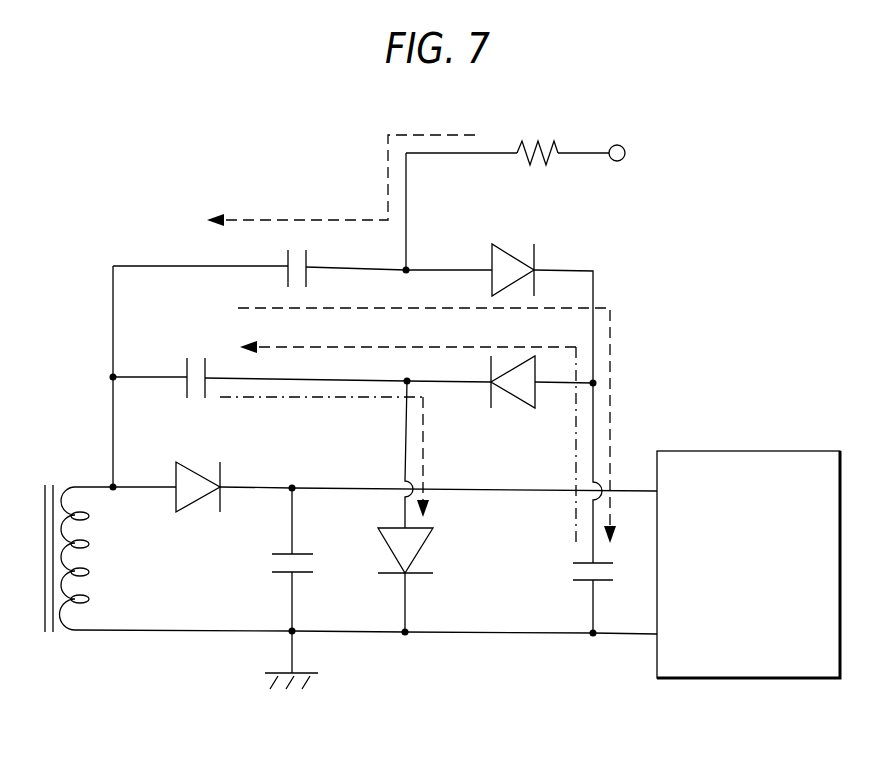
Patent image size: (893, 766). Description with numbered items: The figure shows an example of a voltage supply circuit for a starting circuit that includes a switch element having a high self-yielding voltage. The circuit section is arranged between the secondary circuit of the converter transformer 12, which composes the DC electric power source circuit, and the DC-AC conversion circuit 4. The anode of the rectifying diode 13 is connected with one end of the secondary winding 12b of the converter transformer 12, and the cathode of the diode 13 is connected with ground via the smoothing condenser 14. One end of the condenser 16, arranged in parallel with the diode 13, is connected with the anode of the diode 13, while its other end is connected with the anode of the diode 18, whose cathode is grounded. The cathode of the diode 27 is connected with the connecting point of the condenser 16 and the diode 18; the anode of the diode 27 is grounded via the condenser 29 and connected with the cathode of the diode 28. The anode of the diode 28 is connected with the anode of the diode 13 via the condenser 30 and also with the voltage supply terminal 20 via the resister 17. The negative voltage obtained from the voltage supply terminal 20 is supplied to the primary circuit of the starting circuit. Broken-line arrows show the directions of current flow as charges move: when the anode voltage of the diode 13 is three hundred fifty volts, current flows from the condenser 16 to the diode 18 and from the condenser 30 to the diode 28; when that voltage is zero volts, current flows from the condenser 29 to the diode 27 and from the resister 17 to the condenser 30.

The DC-AC conversion circuit 4 is at (748, 451).
The converter transformer 12 is at (60, 641).
The secondary winding 12b is at (75, 485).
The diode 13 is at (185, 470).
The condenser 14 is at (280, 554).
The condenser 16 is at (205, 366).
The resister 17 is at (538, 143).
The diode 18 is at (428, 546).
The voltage supply terminal 20 is at (623, 146).
The diode 27 is at (520, 408).
The diode 28 is at (503, 249).
The condenser 29 is at (582, 563).
The condenser 30 is at (306, 260).